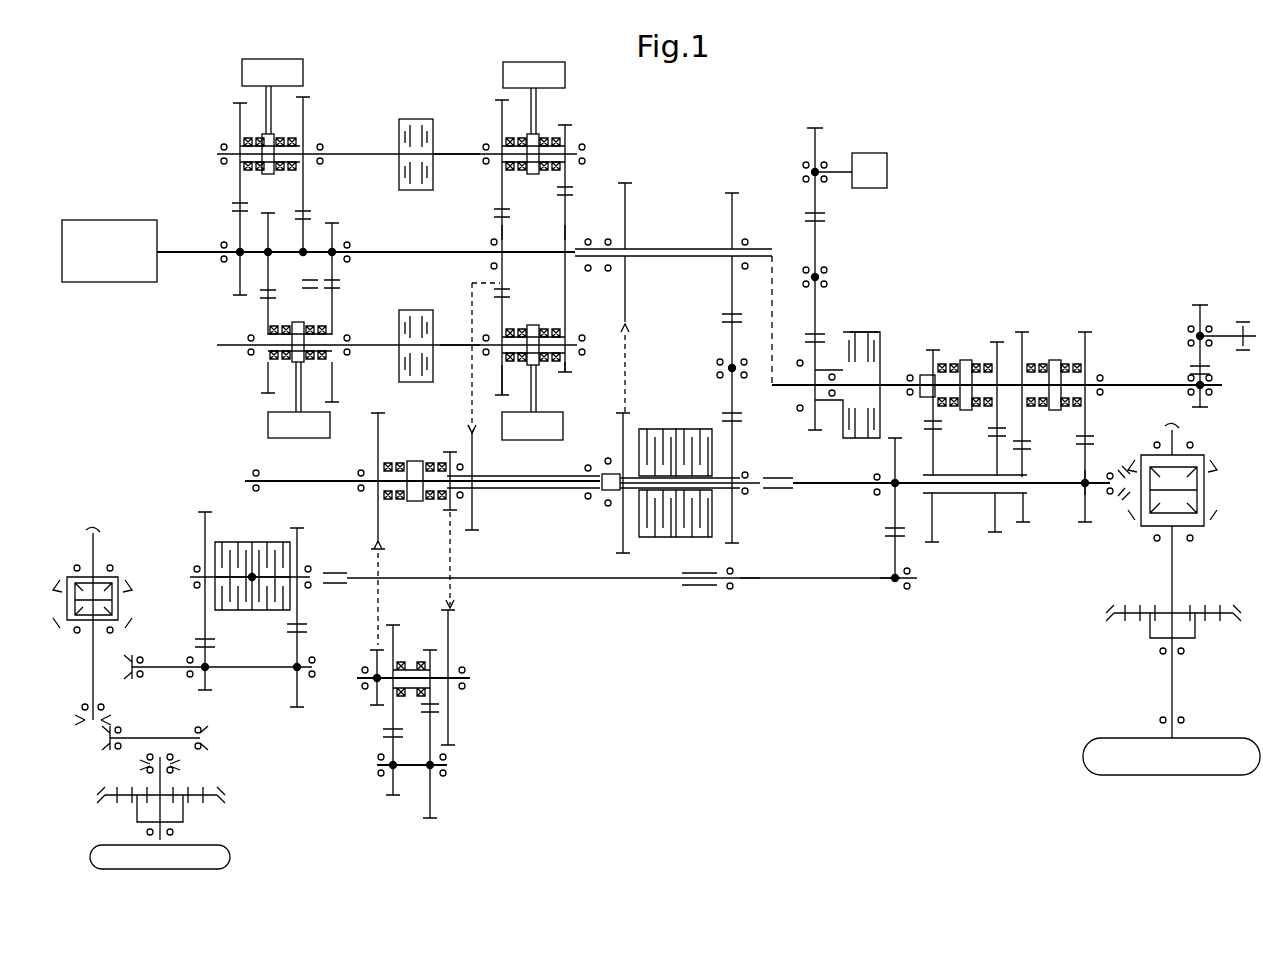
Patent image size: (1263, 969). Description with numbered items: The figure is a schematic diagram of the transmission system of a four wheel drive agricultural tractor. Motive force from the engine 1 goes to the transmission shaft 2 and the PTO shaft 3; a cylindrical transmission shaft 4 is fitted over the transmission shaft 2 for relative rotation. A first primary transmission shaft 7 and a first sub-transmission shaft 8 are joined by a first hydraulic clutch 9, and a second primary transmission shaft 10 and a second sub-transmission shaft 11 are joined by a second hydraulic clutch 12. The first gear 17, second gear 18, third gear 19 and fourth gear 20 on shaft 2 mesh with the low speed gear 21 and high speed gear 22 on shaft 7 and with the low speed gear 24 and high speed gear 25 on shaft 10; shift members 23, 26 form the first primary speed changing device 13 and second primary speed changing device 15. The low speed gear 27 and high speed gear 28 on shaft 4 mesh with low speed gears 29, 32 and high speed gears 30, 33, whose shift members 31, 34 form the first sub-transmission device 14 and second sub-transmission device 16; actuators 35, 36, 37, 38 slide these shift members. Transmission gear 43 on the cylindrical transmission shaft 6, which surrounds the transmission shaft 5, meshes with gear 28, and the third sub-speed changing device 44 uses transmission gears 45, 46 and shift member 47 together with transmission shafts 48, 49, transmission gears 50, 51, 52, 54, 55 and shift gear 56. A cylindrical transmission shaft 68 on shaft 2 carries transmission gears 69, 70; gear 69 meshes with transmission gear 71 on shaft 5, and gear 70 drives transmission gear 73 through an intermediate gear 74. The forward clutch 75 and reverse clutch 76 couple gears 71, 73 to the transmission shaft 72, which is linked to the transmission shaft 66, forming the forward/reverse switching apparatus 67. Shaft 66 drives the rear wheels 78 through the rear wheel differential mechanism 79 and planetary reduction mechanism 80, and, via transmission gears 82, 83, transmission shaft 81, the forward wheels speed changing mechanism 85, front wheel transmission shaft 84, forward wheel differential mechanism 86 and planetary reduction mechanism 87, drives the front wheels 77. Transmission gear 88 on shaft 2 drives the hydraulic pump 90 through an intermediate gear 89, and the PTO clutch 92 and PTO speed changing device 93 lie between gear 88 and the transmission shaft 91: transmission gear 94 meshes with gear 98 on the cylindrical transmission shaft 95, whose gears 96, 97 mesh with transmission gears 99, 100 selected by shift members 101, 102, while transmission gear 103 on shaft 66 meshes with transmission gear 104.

The engine 1 is at (97, 220).
The transmission shaft 2 is at (185, 250).
The PTO shaft 3 is at (1236, 322).
The cylindrical transmission shaft 4 is at (578, 262).
The transmission shaft 5 is at (315, 478).
The cylindrical transmission shaft 6 is at (525, 490).
The first primary transmission shaft 7 is at (222, 348).
The first sub-transmission shaft 8 is at (462, 340).
The first hydraulic clutch 9 is at (424, 310).
The second primary transmission shaft 10 is at (338, 156).
The second sub-transmission shaft 11 is at (462, 160).
The second hydraulic clutch 12 is at (414, 119).
The first primary speed changing device 13 is at (249, 372).
The first sub-transmission device 14 is at (554, 353).
The second primary speed changing device 15 is at (240, 155).
The second sub-transmission device 16 is at (563, 228).
The first gear 17 is at (340, 233).
The second gear 18 is at (322, 288).
The third gear 19 is at (262, 226).
The fourth gear 20 is at (238, 268).
The low speed gear 21 is at (338, 378).
The high speed gear 22 is at (262, 378).
The shift member 23 is at (292, 322).
The low speed gear 24 is at (310, 112).
The high speed gear 25 is at (234, 112).
The shift member 26 is at (262, 176).
The low speed gear 27 is at (568, 232).
The high speed gear 28 is at (494, 232).
The low speed gear 29 is at (568, 372).
The high speed gear 30 is at (496, 383).
The shift member 31 is at (531, 325).
The low speed gear 32 is at (570, 130).
The high speed gear 33 is at (497, 120).
The shift member 34 is at (535, 176).
The actuator 35 is at (299, 400).
The actuator 36 is at (532, 402).
The actuator 37 is at (272, 96).
The actuator 38 is at (534, 98).
The transmission gear 43 is at (478, 510).
The third sub-speed changing device 44 is at (446, 723).
The transmission gear 45 is at (447, 452).
The transmission gear 46 is at (375, 516).
The shift member 47 is at (415, 503).
The transmission shaft 48 is at (468, 686).
The transmission shaft 49 is at (450, 770).
The transmission gear 50 is at (450, 640).
The transmission gear 51 is at (428, 650).
The transmission gear 52 is at (372, 655).
The transmission gear 54 is at (435, 800).
The transmission gear 55 is at (388, 785).
The shift gear 56 is at (388, 720).
The transmission shaft 66 is at (865, 482).
The forward/reverse switching apparatus 67 is at (748, 558).
The cylindrical transmission shaft 68 is at (630, 245).
The transmission gear 69 is at (632, 310).
The transmission gear 70 is at (728, 205).
The transmission gear 71 is at (620, 530).
The transmission shaft 72 is at (755, 492).
The transmission gear 73 is at (735, 450).
The intermediate gear 74 is at (632, 328).
The forward clutch 75 is at (650, 540).
The reverse clutch 76 is at (700, 540).
The front wheels 77 is at (230, 858).
The rear wheels 78 is at (1170, 760).
The rear wheel differential mechanism 79 is at (1214, 511).
The planetary reduction mechanism 80 is at (1127, 632).
The transmission shaft 81 is at (553, 580).
The transmission gear 82 is at (890, 500).
The transmission gear 83 is at (880, 600).
The front wheel transmission shaft 84 is at (172, 665).
The forward wheels speed changing mechanism 85 is at (193, 492).
The forward wheel differential mechanism 86 is at (126, 582).
The planetary reduction mechanism 87 is at (208, 767).
The transmission gear 88 is at (820, 355).
The intermediate gear 89 is at (822, 248).
The hydraulic pump 90 is at (851, 170).
The transmission shaft 91 is at (1140, 378).
The PTO clutch 92 is at (868, 332).
The PTO speed changing device 93 is at (1008, 374).
The transmission gear 94 is at (928, 360).
The cylindrical transmission shaft 95 is at (936, 538).
The transmission gear 96 is at (1025, 522).
The transmission gear 97 is at (996, 535).
The transmission gear 98 is at (905, 585).
The transmission gear 99 is at (1027, 348).
The transmission gear 100 is at (993, 355).
The shift member 101 is at (1056, 412).
The shift member 102 is at (965, 412).
The transmission gear 103 is at (1092, 470).
The transmission gear 104 is at (1089, 350).